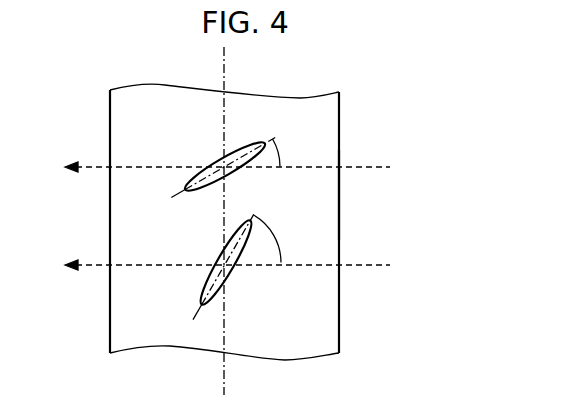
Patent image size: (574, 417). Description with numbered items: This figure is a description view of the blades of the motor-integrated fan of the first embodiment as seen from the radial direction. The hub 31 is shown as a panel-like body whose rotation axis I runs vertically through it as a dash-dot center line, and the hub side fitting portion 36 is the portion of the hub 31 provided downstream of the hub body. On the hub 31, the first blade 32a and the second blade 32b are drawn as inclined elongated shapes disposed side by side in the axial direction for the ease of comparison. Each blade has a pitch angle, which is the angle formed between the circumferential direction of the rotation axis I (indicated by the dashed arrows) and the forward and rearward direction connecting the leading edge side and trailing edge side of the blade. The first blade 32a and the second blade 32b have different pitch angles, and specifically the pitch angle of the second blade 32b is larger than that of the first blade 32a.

The hub 31 is at (341, 99).
The first blade 32a is at (217, 155).
The second blade 32b is at (233, 272).
The hub side fitting portion 36 is at (340, 192).
The rotation axis I is at (226, 62).